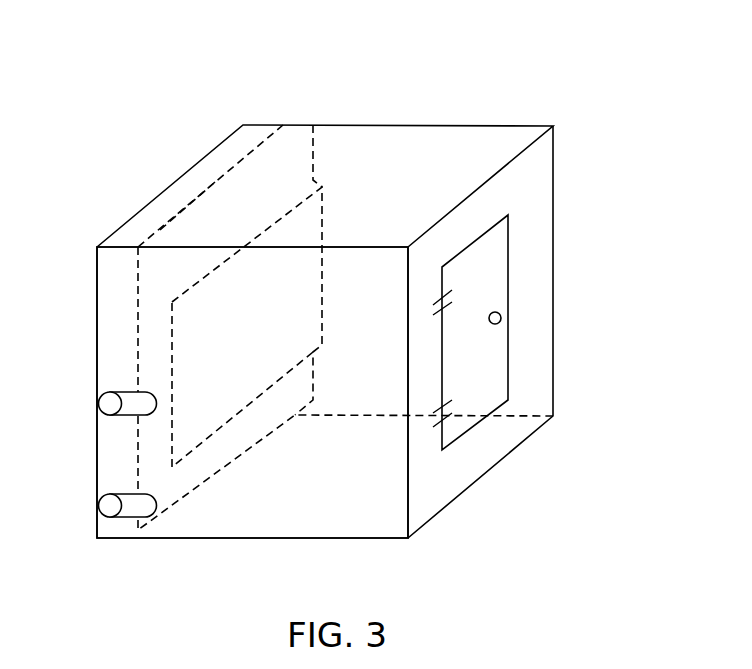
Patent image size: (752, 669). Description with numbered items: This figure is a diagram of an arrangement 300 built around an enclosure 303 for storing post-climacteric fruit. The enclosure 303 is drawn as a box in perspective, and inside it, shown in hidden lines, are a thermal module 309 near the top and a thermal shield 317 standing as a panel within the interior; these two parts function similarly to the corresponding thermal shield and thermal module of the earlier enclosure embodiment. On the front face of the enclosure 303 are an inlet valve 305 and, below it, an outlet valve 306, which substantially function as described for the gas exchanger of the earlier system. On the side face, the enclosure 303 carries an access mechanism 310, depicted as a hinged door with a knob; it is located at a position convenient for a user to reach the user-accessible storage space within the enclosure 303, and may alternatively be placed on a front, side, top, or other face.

The system / device 300 is at (170, 73).
The enclosure 303 is at (437, 133).
The thermal module 309 is at (197, 178).
The thermal shield 317 is at (323, 206).
The access mechanism 310 is at (509, 356).
The inlet valve 305 is at (97, 403).
The outlet valve 306 is at (97, 505).